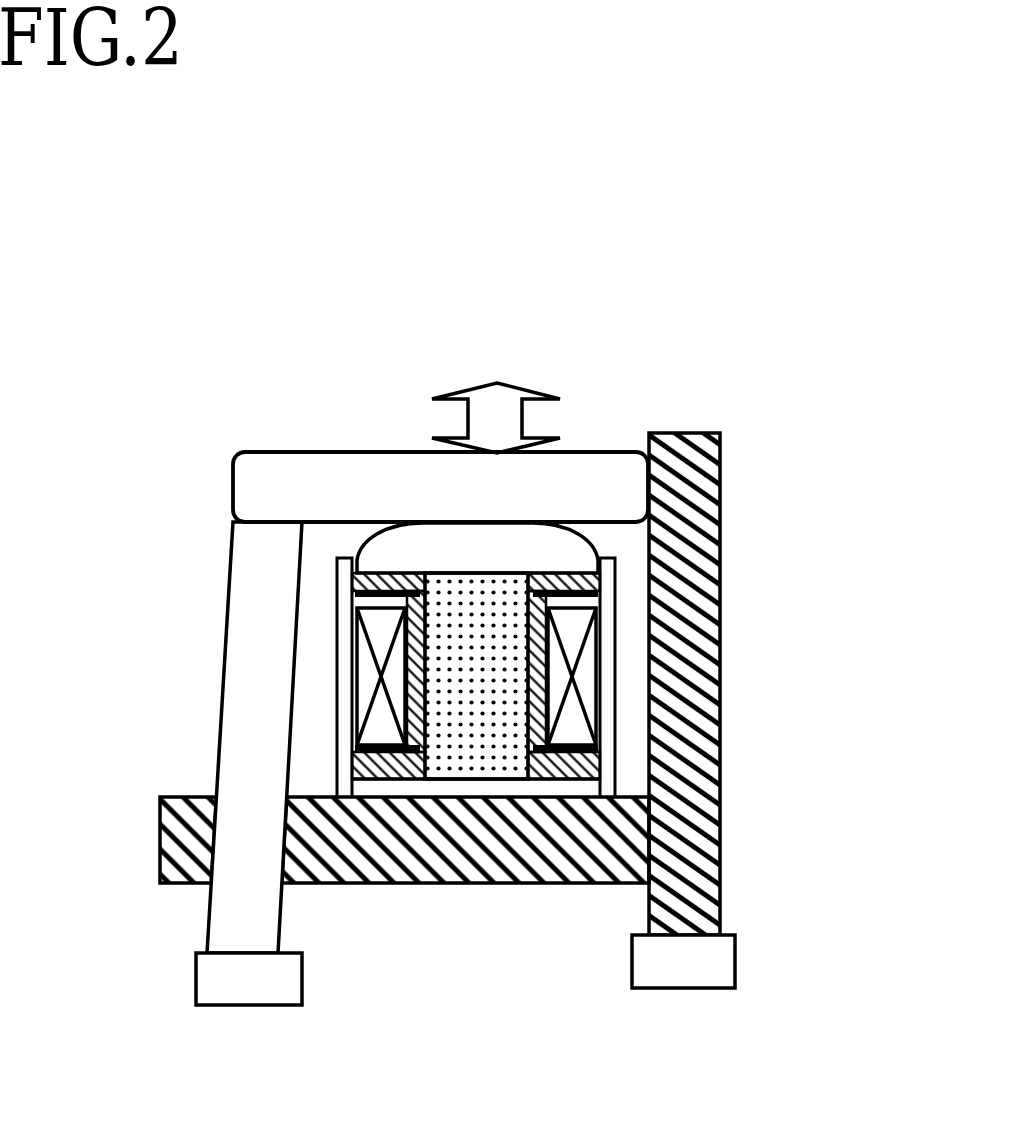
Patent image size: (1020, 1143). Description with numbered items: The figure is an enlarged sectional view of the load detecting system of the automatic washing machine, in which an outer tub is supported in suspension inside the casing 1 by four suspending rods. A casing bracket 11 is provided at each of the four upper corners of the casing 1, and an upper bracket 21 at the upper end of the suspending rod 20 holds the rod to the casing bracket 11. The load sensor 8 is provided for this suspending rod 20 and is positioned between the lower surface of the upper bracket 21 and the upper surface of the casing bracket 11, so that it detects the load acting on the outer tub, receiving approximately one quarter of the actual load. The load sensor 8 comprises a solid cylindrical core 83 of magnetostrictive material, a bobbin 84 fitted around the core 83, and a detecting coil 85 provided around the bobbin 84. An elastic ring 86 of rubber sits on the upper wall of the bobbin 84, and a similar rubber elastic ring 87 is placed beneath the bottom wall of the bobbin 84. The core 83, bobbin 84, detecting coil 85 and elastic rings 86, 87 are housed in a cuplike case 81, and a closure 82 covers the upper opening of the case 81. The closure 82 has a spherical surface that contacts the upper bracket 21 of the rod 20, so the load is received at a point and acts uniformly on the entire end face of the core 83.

The casing 1 is at (687, 522).
The load sensor 8 is at (263, 393).
The casing bracket 11 is at (540, 872).
The suspending rod 20 is at (250, 867).
The upper bracket 21 is at (563, 487).
The case 81 is at (607, 752).
The closure 82 is at (412, 560).
The core 83 is at (457, 725).
The bobbin 84 is at (410, 678).
The detecting coil 85 is at (563, 678).
The elastic ring 86 is at (358, 565).
The elastic ring 87 is at (360, 758).